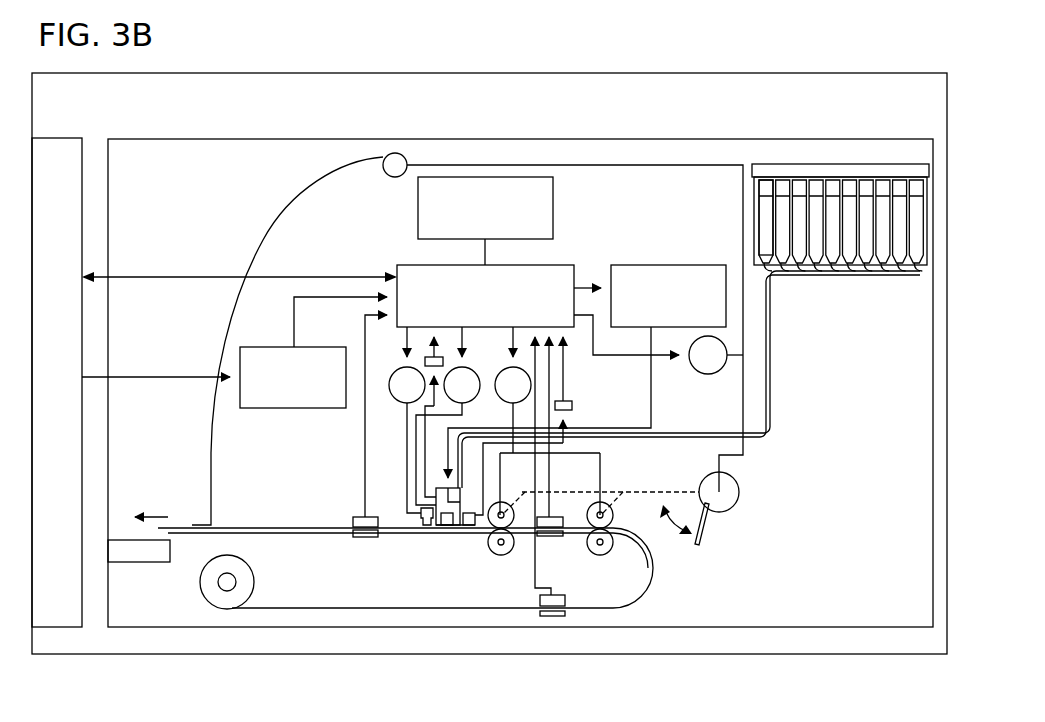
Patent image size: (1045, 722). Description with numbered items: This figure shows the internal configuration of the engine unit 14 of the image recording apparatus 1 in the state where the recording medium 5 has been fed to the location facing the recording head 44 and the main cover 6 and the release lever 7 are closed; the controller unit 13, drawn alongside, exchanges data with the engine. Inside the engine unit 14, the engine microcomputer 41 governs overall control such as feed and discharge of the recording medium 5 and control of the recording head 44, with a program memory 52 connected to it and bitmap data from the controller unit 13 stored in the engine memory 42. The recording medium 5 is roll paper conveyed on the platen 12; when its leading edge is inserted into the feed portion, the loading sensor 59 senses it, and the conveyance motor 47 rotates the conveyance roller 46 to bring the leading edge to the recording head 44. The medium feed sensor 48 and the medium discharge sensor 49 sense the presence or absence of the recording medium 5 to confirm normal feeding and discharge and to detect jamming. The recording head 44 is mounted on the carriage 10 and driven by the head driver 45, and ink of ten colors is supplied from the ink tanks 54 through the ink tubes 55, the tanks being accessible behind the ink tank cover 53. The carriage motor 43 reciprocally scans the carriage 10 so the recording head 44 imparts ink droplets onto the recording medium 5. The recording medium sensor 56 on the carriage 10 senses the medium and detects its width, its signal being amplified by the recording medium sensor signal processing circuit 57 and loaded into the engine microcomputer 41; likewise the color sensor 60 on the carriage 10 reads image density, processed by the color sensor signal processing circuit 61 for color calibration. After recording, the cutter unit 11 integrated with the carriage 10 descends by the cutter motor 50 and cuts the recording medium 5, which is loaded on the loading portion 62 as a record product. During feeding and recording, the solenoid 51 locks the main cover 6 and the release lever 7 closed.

The image recording apparatus 1 is at (356, 72).
The controller unit 13 is at (56, 137).
The engine unit 14 is at (645, 138).
The main cover 6 is at (263, 236).
The recording medium 5 is at (250, 529).
The release lever 7 is at (740, 492).
The carriage 10 is at (463, 501).
The cutter unit 11 is at (421, 510).
The platen 12 is at (183, 537).
The engine microcomputer 41 is at (426, 265).
The engine memory 42 is at (296, 409).
The carriage motor 43 is at (474, 374).
The recording head 44 is at (443, 482).
The head driver 45 is at (646, 264).
The conveyance roller 46 is at (507, 510).
The conveyance motor 47 is at (502, 400).
The medium feed sensor 48 is at (553, 537).
The medium discharge sensor 49 is at (365, 538).
The cutter motor 50 is at (396, 400).
The solenoid 51 is at (708, 375).
The program memory 52 is at (553, 203).
The ink tank cover 53 is at (838, 163).
The ink tanks 54 is at (757, 213).
The ink tubes 55 is at (770, 330).
The recording medium sensor 56 is at (472, 527).
The recording medium sensor signal processing circuit 57 is at (572, 405).
The loading sensor 59 is at (553, 617).
The color sensor 60 is at (448, 530).
The color sensor signal processing circuit 61 is at (425, 360).
The loading portion 62 is at (135, 563).